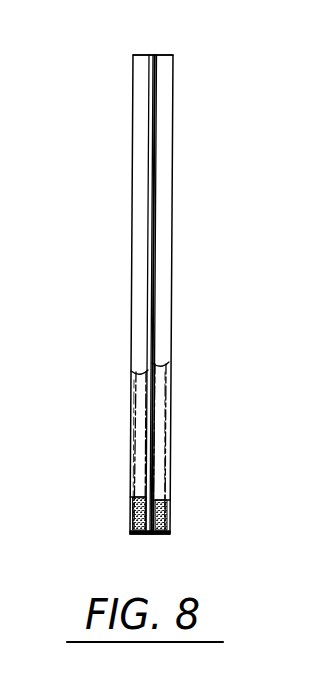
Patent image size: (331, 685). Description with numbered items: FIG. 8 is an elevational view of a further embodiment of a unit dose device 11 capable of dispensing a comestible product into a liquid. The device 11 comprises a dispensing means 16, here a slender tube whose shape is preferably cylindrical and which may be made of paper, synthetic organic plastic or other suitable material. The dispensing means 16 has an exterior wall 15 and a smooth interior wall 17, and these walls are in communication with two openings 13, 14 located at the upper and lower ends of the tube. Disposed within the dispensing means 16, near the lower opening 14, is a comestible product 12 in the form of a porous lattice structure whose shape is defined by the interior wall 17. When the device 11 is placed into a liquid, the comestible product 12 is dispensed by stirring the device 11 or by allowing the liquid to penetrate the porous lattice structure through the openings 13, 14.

The device 11 is at (130, 160).
The comestible product 12 is at (140, 515).
The opening 13 is at (160, 55).
The opening 14 is at (140, 535).
The exterior wall 15 is at (138, 468).
The dispensing means 16 is at (160, 262).
The interior wall 17 is at (143, 438).